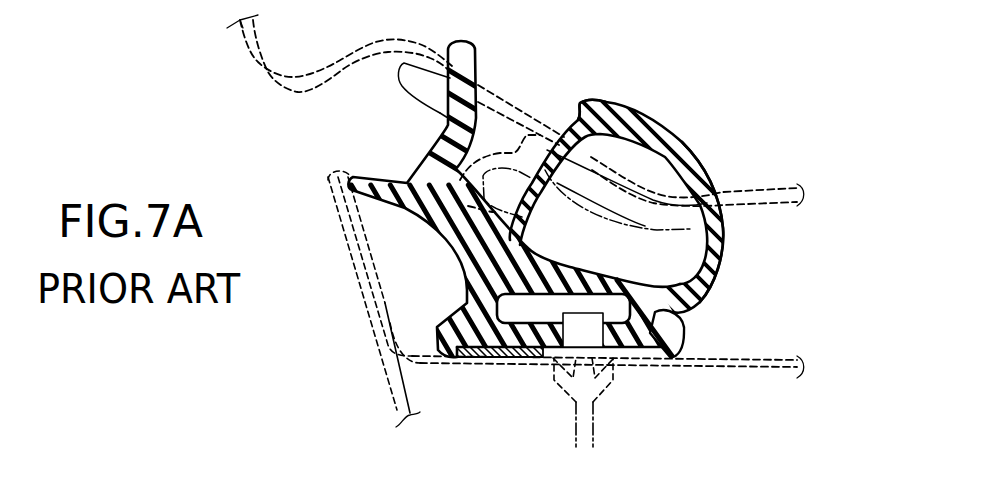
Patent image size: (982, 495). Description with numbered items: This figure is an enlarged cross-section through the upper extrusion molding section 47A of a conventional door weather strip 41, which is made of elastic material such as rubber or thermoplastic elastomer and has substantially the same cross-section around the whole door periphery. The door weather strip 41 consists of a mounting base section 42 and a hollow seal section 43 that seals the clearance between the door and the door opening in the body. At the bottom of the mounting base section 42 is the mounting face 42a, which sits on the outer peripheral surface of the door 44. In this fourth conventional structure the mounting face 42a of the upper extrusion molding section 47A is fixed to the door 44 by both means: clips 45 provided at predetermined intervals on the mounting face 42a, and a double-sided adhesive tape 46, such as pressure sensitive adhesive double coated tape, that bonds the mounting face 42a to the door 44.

The door weather strip 41 is at (661, 96).
The upper extrusion molding section 47A is at (586, 92).
The hollow seal section 43 is at (697, 162).
The mounting base section 42 is at (678, 340).
The mounting face 42a is at (518, 360).
The door 44 is at (330, 215).
The clip 45 is at (574, 433).
The double-sided adhesive tape 46 is at (467, 359).